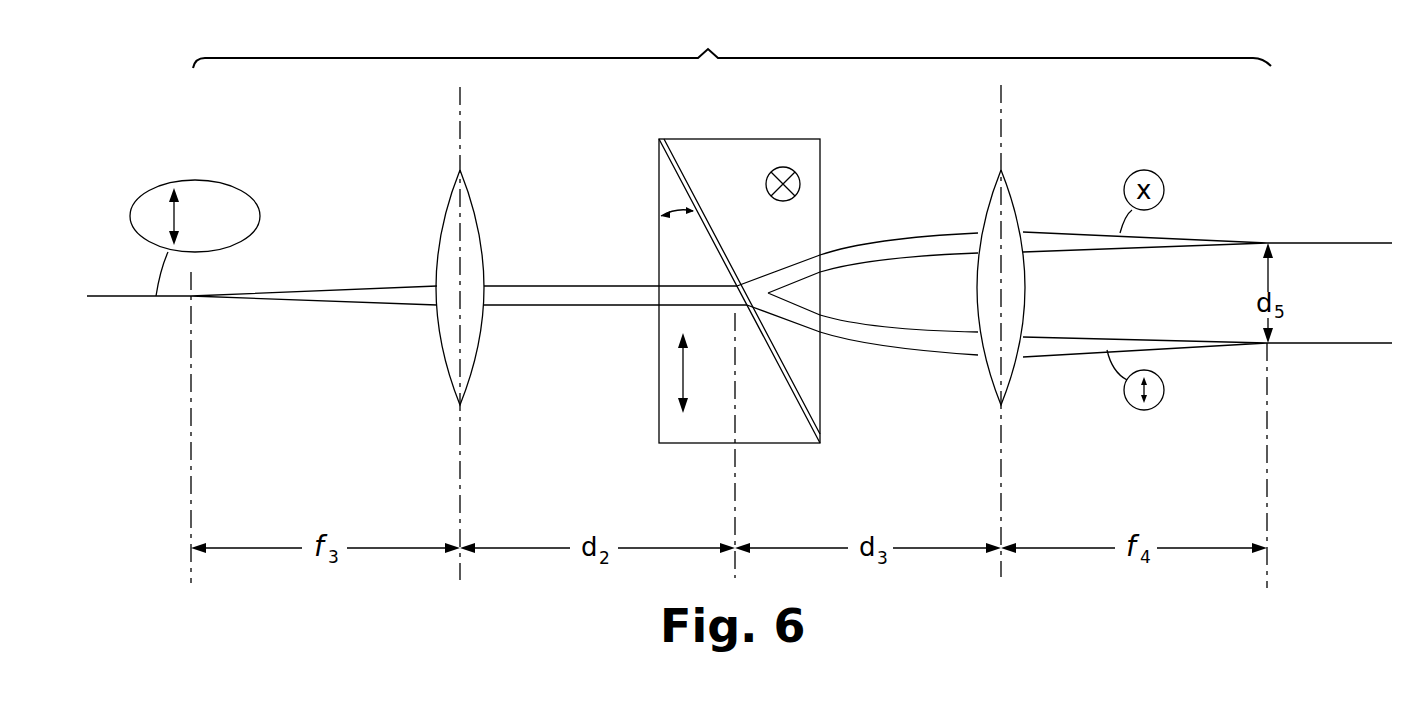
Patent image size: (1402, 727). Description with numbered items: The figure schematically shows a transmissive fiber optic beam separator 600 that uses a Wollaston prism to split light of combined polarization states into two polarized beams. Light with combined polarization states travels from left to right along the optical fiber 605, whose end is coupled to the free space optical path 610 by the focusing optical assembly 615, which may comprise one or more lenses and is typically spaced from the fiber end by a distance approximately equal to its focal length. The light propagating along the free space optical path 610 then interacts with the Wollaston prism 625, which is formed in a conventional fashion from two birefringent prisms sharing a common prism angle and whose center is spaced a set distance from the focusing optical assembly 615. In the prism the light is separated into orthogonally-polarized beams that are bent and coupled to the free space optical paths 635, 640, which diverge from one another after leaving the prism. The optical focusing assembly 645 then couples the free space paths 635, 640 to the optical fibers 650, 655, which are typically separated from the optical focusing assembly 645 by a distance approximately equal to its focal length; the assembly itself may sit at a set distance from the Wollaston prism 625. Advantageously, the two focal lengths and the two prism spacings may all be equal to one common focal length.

The transmissive fiber optic beam separator 600 is at (732, 44).
The optical fiber 605 is at (118, 313).
The free space optical path 610 is at (523, 283).
The focusing optical assembly 615 is at (467, 185).
The Wollaston prism 625 is at (737, 139).
The free space optical path 635 is at (880, 247).
The free space optical path 640 is at (892, 343).
The optical focusing assembly 645 is at (1007, 187).
The optical fiber 650 is at (1322, 342).
The optical fiber 655 is at (1330, 244).